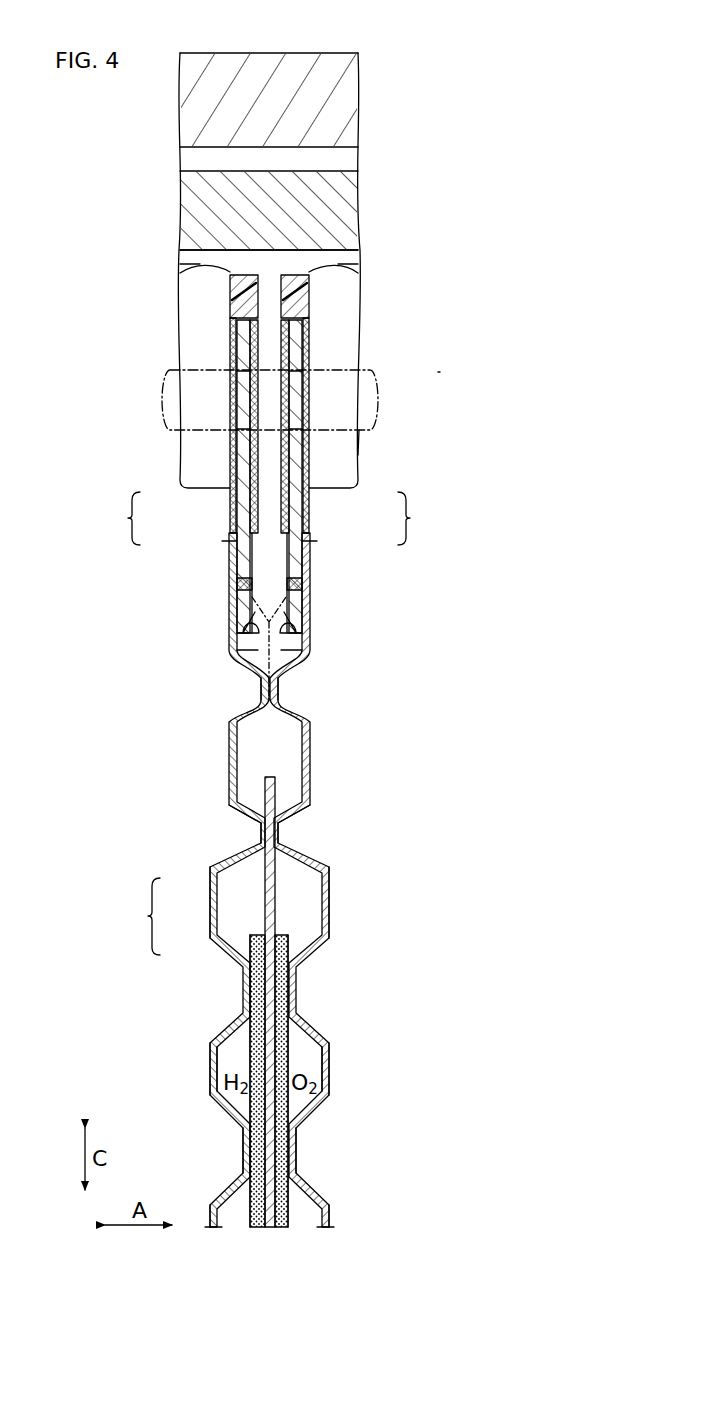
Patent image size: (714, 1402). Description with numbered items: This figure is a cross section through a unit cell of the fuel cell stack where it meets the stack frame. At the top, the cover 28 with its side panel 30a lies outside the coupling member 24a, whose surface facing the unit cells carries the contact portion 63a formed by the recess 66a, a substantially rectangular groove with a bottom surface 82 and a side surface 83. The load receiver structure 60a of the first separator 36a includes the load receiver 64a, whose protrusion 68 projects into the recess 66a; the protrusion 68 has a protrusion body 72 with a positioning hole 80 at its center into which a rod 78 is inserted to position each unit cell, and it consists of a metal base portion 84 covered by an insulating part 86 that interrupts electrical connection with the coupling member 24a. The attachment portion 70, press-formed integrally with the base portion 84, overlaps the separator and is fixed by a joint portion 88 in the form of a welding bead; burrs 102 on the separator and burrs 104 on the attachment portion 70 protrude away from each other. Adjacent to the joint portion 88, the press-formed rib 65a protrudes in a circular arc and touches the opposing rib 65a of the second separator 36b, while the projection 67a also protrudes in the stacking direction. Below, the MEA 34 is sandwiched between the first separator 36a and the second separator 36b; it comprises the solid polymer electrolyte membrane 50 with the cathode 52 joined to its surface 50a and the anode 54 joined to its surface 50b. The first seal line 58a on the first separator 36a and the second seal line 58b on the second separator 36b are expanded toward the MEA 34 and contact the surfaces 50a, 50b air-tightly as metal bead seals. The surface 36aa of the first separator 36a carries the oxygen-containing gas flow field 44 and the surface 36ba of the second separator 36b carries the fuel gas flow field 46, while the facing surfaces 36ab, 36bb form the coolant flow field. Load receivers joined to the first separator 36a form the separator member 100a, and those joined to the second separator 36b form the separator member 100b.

The cover 28 is at (358, 75).
The side panel 30a is at (340, 97).
The coupling member 24a is at (340, 208).
The bottom surface 82 is at (360, 264).
The load receiver 64a is at (228, 272).
The protrusion body 72 is at (232, 312).
The rod 78 is at (371, 372).
The load receiver structure 60a is at (442, 370).
The positioning hole 80 is at (245, 397).
The contact portion 63a is at (362, 444).
The side surface 83 is at (200, 470).
The recess 66a is at (340, 470).
The protrusion 68 is at (275, 518).
The insulating part 86 is at (232, 510).
The base portion 84 is at (243, 525).
The burrs 102 is at (231, 545).
The attachment portion 70 is at (235, 568).
The joint portion 88 is at (240, 585).
The burrs 104 is at (243, 625).
The projection 67a is at (250, 653).
The rib 65a is at (262, 688).
The second seal line 58b is at (262, 828).
The first seal line 58a is at (278, 827).
The separator member 100b is at (206, 864).
The separator member 100a is at (333, 864).
The solid polymer electrolyte membrane 50 is at (265, 888).
The cathode 52 is at (280, 938).
The anode 54 is at (253, 943).
The MEA 34 is at (247, 1002).
The surface 50b is at (262, 990).
The surface 50a is at (280, 996).
The fuel gas flow field 46 is at (232, 1058).
The oxygen-containing gas flow field 44 is at (308, 1058).
The surface 36bb is at (212, 1086).
The surface 36ab is at (330, 1086).
The surface 36ba is at (249, 1140).
The surface 36aa is at (290, 1141).
The second separator 36b is at (218, 1190).
The first separator 36a is at (320, 1190).